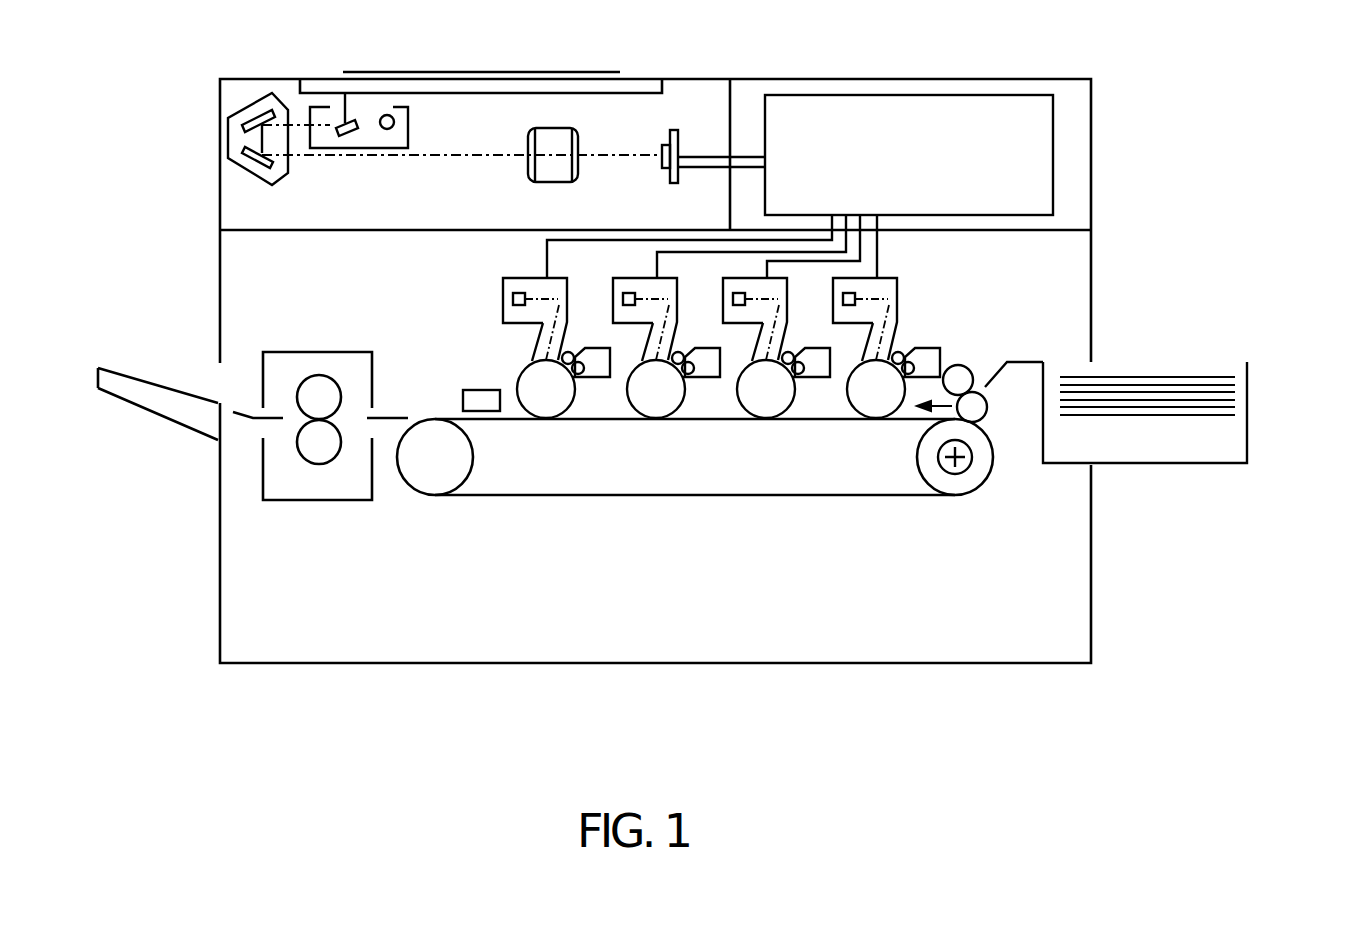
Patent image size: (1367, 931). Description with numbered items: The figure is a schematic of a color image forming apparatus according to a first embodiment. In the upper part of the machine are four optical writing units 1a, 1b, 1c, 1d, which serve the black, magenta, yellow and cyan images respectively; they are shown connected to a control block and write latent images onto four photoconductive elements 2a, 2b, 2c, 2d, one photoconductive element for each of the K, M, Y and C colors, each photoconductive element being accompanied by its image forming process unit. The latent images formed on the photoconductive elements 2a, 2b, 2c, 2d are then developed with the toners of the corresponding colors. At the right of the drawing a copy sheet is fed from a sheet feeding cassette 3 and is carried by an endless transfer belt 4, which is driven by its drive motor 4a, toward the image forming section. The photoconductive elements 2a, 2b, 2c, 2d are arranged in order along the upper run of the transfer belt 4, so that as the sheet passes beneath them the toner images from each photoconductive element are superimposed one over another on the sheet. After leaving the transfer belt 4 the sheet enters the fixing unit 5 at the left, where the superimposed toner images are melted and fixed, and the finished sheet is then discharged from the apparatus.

The optical writing unit 1a is at (885, 278).
The optical writing unit 1b is at (743, 278).
The optical writing unit 1c is at (642, 278).
The optical writing unit 1d is at (513, 278).
The photoconductive element 2a is at (876, 420).
The photoconductive element 2b is at (766, 420).
The photoconductive element 2c is at (656, 420).
The photoconductive element 2d is at (547, 420).
The sheet feeding cassette 3 is at (1182, 375).
The transfer belt 4 is at (937, 495).
The drive motor 4a is at (966, 471).
The fixing unit 5 is at (263, 357).